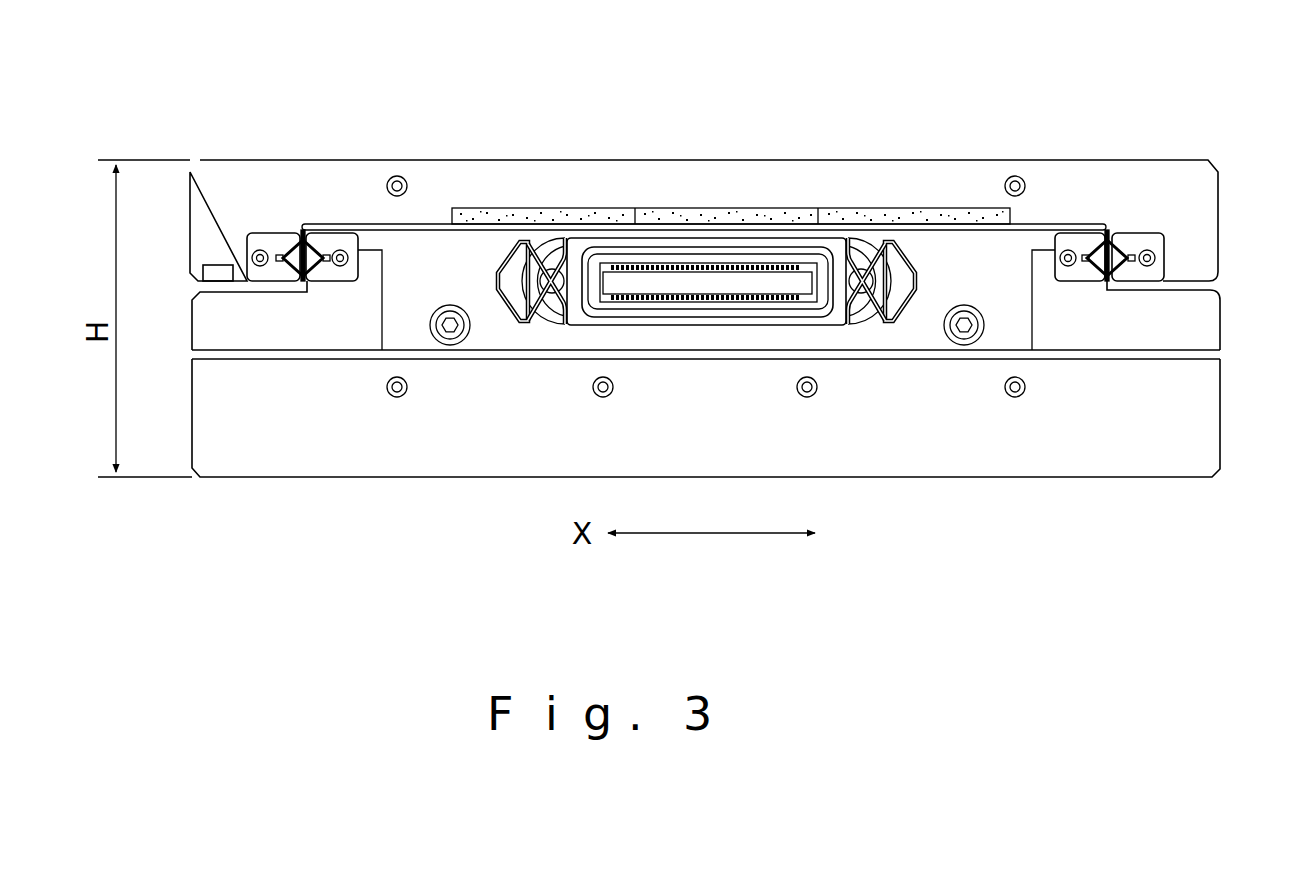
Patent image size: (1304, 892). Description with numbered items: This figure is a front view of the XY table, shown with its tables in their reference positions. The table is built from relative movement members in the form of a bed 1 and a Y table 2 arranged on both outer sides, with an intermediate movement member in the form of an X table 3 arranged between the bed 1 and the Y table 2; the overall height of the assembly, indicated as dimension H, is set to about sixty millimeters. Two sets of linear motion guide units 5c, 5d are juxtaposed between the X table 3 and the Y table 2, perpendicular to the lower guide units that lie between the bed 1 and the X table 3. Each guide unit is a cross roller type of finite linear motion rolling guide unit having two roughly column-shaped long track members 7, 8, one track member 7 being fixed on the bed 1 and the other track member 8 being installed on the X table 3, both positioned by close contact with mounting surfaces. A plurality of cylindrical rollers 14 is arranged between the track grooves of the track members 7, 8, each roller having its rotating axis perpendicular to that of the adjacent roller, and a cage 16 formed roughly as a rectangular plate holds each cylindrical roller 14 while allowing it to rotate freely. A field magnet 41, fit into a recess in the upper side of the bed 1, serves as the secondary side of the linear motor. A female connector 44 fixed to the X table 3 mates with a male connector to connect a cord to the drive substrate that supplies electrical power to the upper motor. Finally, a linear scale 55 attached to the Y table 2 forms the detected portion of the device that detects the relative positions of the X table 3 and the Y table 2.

The bed 1 is at (1218, 488).
The Y table 2 is at (1223, 166).
The X table 3 is at (1226, 320).
The linear motion guide unit 5c is at (359, 224).
The linear motion guide unit 5d is at (1051, 223).
The track member 7 is at (271, 245).
The track member 8 is at (341, 243).
The cylindrical roller 14 is at (314, 254).
The cage 16 is at (303, 231).
The field magnet 41 is at (761, 205).
The female connector 44 is at (675, 236).
The linear scale 55 is at (218, 265).